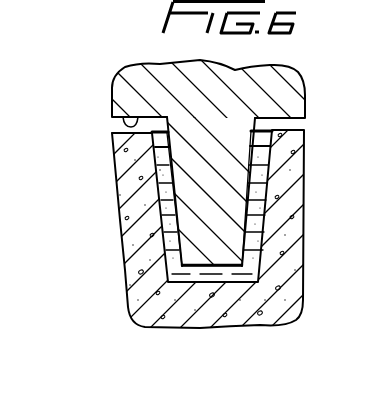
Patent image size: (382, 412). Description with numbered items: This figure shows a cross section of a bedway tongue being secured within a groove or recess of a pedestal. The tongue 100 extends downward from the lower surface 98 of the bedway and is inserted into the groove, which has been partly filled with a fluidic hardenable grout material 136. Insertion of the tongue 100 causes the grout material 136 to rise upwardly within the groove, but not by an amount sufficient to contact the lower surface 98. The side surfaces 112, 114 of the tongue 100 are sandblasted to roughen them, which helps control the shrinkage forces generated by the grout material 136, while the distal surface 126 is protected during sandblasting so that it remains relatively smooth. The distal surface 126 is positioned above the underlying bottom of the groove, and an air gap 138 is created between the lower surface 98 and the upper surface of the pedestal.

The lower surface 98 is at (138, 112).
The tongue element 100 is at (222, 158).
The side surface 112 is at (172, 192).
The side surface 114 is at (258, 195).
The distal surface 126 is at (194, 272).
The grout material 136 is at (253, 247).
The air gap 138 is at (106, 126).